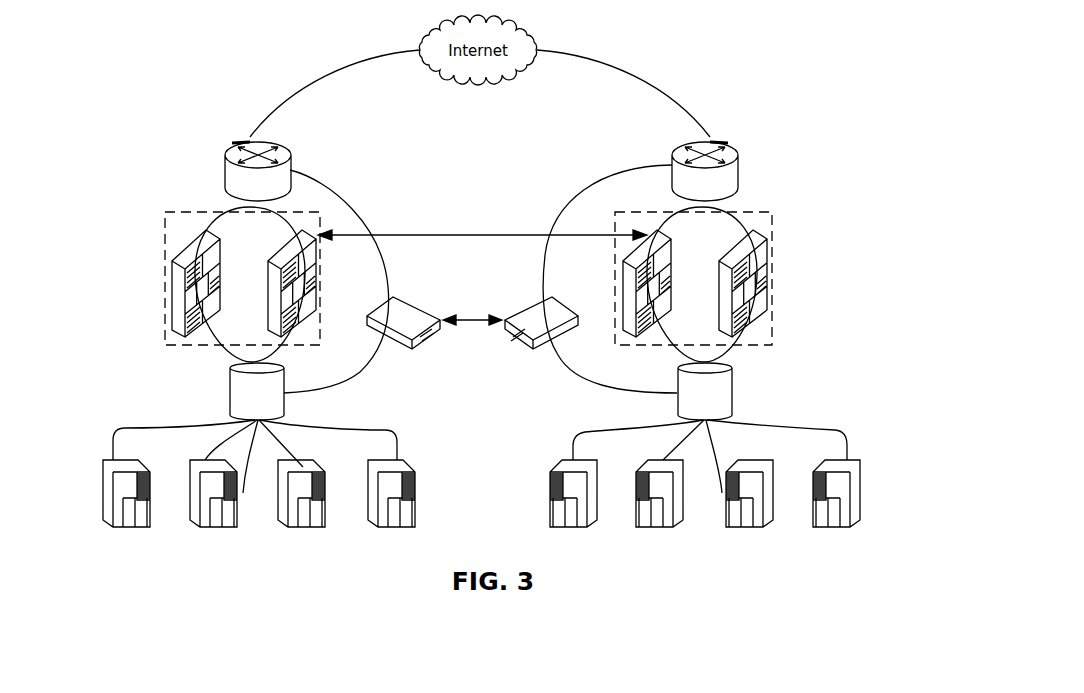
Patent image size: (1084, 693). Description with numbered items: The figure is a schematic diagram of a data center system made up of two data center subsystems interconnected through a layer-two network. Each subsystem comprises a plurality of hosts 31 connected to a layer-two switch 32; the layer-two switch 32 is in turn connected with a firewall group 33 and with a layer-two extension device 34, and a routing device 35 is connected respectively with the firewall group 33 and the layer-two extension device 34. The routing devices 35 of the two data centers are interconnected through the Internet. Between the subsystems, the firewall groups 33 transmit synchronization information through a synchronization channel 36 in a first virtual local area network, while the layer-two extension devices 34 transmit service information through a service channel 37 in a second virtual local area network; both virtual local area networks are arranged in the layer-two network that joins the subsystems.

The host 31 is at (138, 467).
The layer-2 switch 32 is at (240, 402).
The firewall group 33 is at (203, 225).
The layer-2 extension device 34 is at (402, 302).
The routing device 35 is at (237, 145).
The synchronization channel 36 is at (412, 234).
The service channel 37 is at (472, 323).